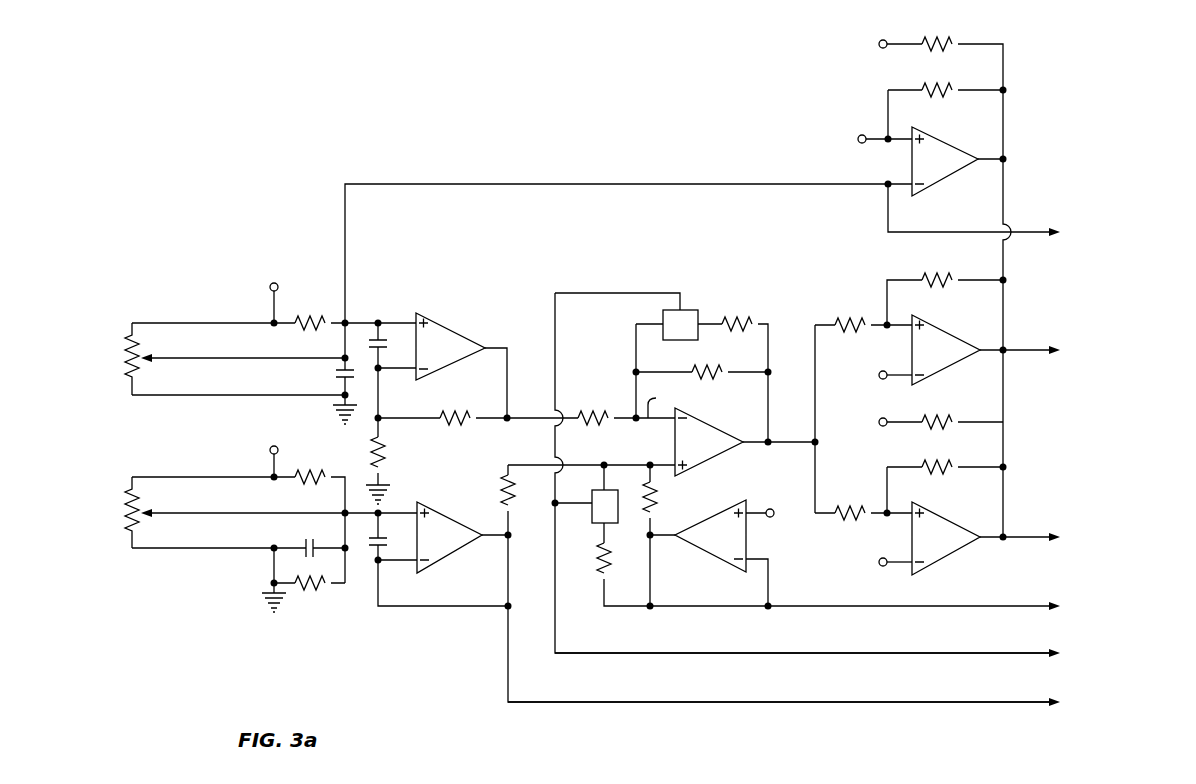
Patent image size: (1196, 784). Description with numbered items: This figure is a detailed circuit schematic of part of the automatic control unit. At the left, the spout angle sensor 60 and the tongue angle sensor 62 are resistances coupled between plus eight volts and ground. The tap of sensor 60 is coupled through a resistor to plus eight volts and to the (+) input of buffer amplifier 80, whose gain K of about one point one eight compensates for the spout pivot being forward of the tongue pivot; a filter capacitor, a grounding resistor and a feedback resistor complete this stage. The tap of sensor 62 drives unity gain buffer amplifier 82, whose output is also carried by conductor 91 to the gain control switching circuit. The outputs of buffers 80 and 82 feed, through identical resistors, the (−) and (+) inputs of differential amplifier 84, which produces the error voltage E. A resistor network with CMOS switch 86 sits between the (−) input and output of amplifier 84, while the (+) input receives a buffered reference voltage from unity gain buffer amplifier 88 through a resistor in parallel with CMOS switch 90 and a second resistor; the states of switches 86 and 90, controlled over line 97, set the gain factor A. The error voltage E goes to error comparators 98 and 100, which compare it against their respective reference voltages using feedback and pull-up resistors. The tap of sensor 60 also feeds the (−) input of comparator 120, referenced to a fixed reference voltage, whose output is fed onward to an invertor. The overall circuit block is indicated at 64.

The spout angle sensor 60 is at (121, 284).
The tongue angle sensor 62 is at (118, 572).
The computing circuit 64 is at (504, 96).
The buffer amplifier 80 is at (443, 326).
The unity gain buffer amplifier 82 is at (447, 556).
The differential amplifier 84 is at (706, 424).
The CMOS switch 86 is at (692, 310).
The unity gain buffer amplifier 88 is at (718, 557).
The CMOS switch 90 is at (597, 524).
The conductor 91 is at (966, 702).
The line 97 is at (969, 654).
The error comparator 98 is at (945, 332).
The error comparator 100 is at (945, 557).
The comparator 120 is at (940, 180).